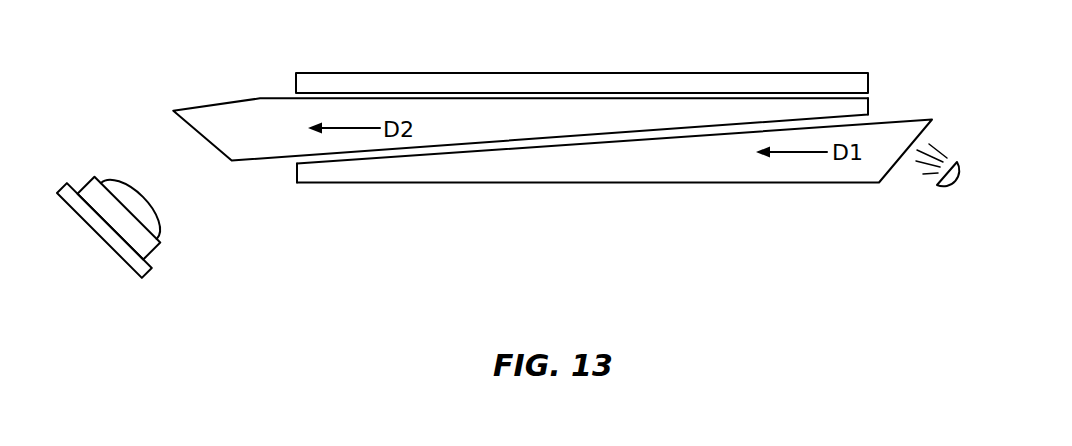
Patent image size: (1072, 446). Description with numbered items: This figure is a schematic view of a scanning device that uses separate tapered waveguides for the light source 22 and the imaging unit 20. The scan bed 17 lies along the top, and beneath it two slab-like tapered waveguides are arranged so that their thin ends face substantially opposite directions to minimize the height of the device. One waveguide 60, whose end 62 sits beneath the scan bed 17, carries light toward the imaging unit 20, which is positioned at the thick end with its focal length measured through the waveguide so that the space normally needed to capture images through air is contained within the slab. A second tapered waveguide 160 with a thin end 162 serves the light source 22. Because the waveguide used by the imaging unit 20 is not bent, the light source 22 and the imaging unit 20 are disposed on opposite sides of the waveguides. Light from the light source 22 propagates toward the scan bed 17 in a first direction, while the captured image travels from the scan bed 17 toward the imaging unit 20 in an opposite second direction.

The scan bed 17 is at (333, 73).
The light guide 60 is at (233, 120).
The end of light guide 62 is at (875, 106).
The wedge light guide 160 is at (826, 173).
The thin end of wedge light guide 162 is at (292, 173).
The imaging unit 20 is at (157, 261).
The light source 22 is at (963, 173).